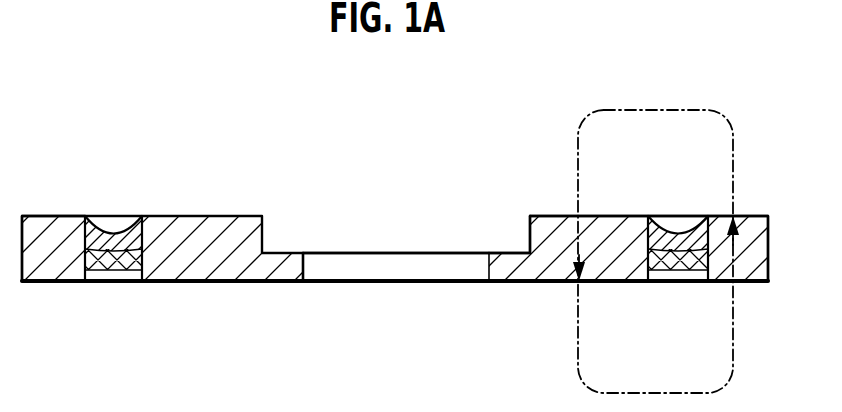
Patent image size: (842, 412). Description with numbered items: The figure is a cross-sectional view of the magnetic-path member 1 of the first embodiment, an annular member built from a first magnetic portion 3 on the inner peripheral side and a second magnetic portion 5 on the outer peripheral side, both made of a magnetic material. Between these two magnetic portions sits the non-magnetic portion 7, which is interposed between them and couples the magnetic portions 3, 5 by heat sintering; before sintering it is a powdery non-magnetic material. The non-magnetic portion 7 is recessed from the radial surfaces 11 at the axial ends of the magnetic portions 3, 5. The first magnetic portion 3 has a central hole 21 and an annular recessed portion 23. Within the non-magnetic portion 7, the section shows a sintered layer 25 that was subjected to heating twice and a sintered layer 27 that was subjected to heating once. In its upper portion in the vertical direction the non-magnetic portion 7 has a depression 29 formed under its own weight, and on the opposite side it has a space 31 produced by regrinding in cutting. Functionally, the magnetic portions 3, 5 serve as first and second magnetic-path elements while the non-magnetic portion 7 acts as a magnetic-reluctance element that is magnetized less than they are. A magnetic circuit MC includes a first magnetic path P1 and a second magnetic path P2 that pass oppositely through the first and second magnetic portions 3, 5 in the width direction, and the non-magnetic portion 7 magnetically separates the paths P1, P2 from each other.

The magnetic-path member 1 is at (421, 206).
The first magnetic portion 3 is at (211, 208).
The second magnetic portion 5 is at (55, 215).
The non-magnetic portion 7 is at (112, 205).
The radial surfaces 11 is at (550, 216).
The central hole 21 is at (305, 262).
The annular recessed portion 23 is at (530, 228).
The sintered layer subjected to heating twice 25 is at (650, 262).
The sintered layer subjected to heating once 27 is at (642, 222).
The depression 29 is at (682, 216).
The space 31 is at (690, 283).
The magnetic circuit MC is at (657, 110).
The first magnetic path P1 is at (735, 228).
The second magnetic path P2 is at (555, 283).